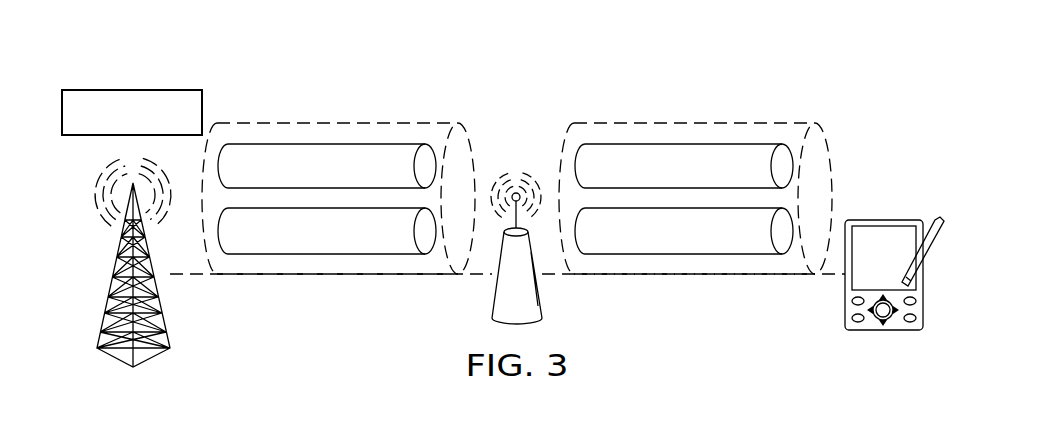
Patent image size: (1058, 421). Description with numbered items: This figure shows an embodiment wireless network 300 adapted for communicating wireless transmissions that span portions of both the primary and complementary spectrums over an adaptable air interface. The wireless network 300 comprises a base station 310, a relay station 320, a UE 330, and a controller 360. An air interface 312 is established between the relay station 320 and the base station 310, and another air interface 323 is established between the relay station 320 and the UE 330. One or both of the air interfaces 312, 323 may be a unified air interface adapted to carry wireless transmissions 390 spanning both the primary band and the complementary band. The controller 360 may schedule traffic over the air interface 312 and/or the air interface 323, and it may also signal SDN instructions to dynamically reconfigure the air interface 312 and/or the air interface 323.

The wireless network 300 is at (610, 66).
The base station 310 is at (118, 362).
The air interface 312 is at (336, 276).
The relay station 320 is at (492, 290).
The air interface 323 is at (715, 276).
The UE 330 is at (883, 331).
The controller 360 is at (131, 90).
The wireless transmissions 390 is at (320, 118).